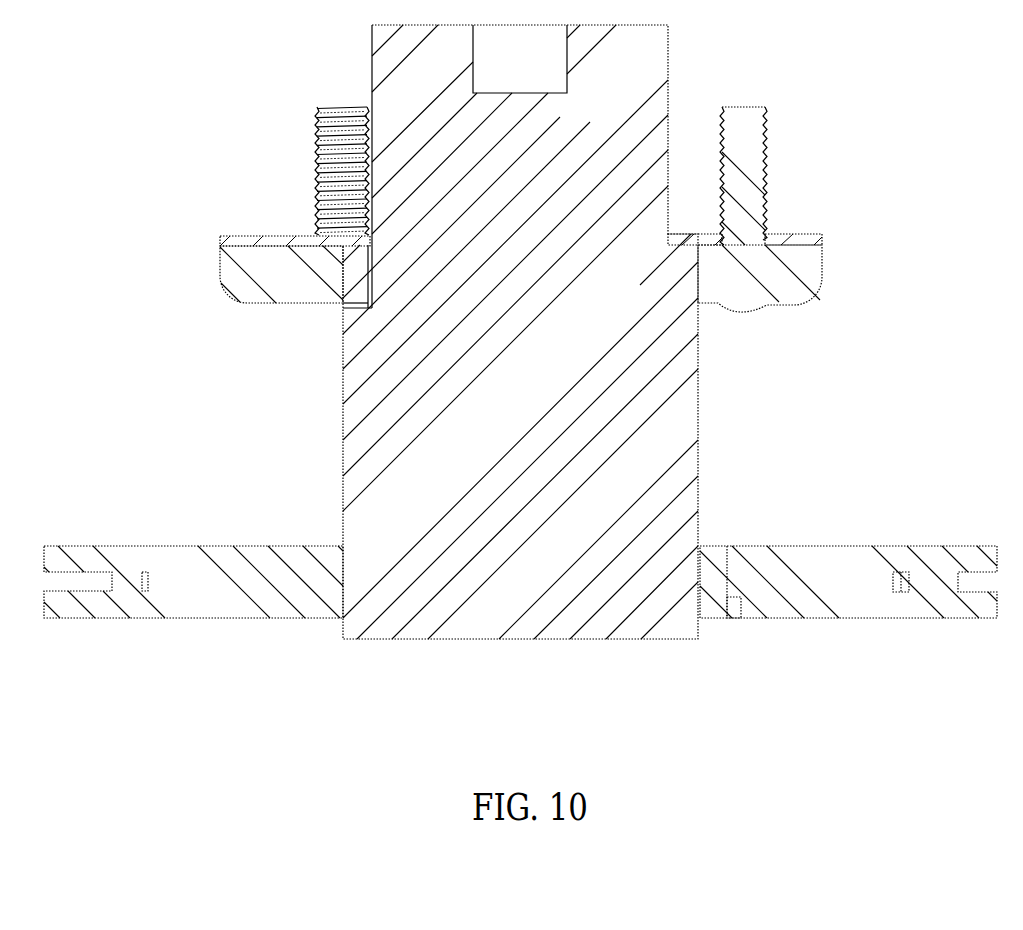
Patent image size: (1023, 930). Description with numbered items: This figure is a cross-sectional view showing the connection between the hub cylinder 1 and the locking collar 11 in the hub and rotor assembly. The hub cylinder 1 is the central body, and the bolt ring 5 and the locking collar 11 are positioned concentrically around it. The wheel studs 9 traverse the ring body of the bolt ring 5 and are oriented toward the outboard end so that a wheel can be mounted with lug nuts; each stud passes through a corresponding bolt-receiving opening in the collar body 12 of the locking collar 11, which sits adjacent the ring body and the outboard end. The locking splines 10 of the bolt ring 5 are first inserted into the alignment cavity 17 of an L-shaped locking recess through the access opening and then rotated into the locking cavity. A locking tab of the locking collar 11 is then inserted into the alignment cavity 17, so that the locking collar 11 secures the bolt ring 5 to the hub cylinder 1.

The hub cylinder 1 is at (749, 381).
The bolt ring 5 is at (823, 271).
The wheel studs 9 is at (318, 119).
The locking splines 10 is at (366, 253).
The locking collar 11 is at (823, 240).
The collar body 12 is at (220, 245).
The alignment cavity 17 is at (372, 299).